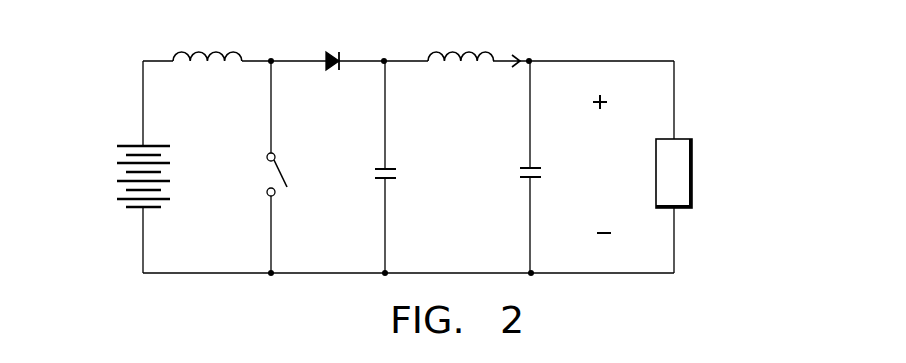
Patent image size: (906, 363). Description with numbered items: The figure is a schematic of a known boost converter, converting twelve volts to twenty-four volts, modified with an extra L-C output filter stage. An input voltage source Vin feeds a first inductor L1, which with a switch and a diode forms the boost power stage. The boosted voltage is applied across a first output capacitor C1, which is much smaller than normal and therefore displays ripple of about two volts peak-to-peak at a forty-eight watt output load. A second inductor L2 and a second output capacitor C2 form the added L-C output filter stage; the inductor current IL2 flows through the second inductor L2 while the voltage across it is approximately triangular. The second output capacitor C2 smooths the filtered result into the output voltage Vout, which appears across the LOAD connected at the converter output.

The input voltage source Vin is at (117, 176).
The first inductor L1 is at (207, 79).
The first output capacitor C1 is at (368, 167).
The second inductor L2 is at (461, 78).
The inductor current IL2 is at (511, 46).
The second output capacitor C2 is at (510, 167).
The output voltage Vout is at (602, 164).
The load LOAD is at (715, 173).